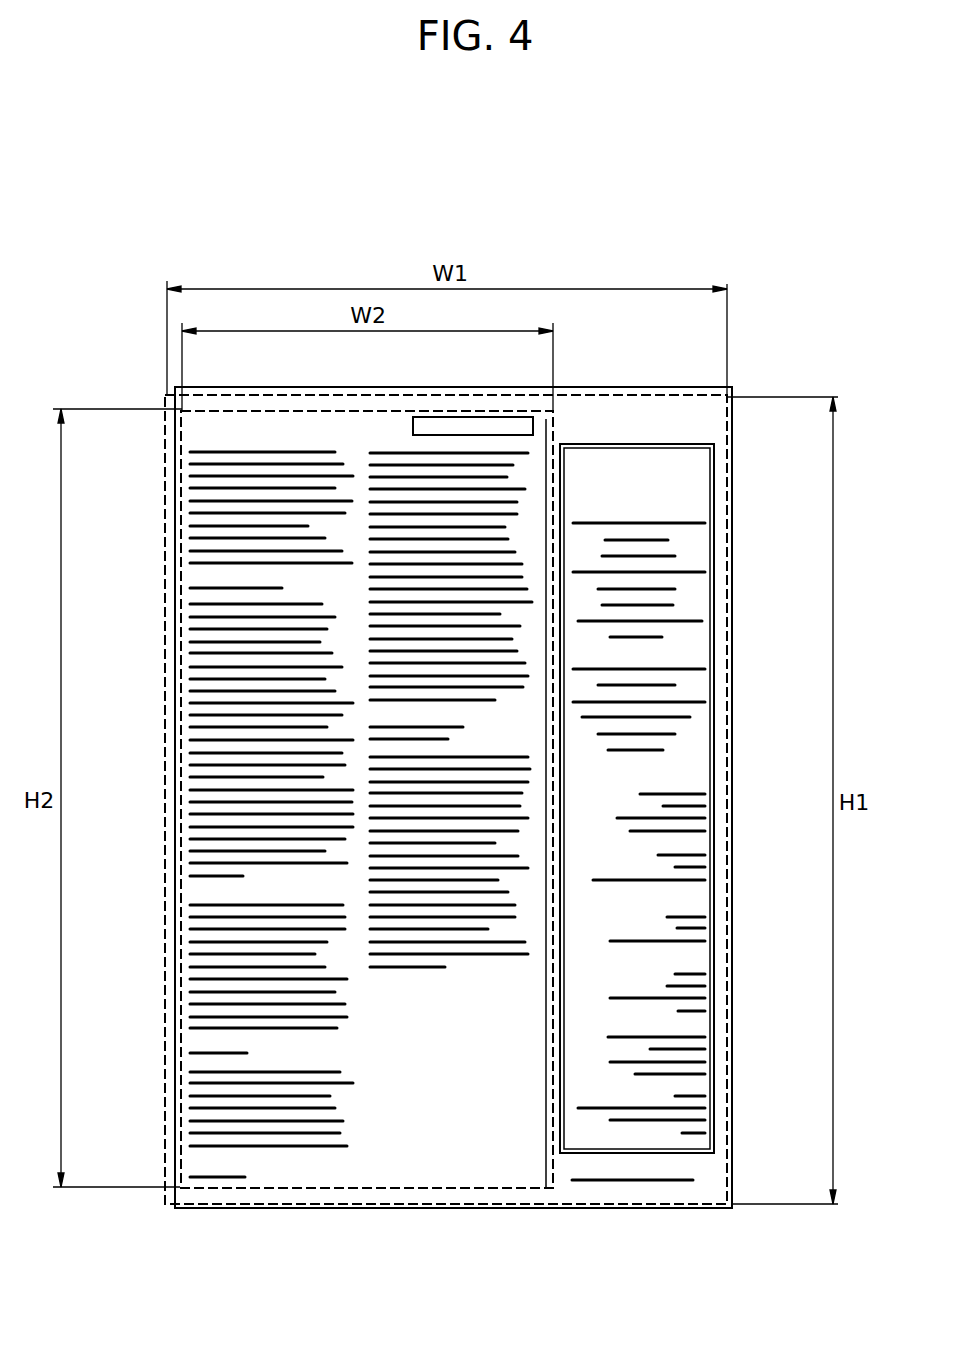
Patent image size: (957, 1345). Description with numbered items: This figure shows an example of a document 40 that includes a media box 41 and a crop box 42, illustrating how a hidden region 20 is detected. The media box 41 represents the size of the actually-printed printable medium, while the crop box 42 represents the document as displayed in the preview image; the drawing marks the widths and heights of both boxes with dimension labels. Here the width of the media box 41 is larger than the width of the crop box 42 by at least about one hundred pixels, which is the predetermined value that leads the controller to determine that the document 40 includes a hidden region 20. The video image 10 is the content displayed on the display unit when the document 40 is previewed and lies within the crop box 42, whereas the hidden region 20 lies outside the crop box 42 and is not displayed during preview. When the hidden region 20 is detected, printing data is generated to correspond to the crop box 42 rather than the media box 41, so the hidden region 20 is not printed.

The document 40 is at (795, 266).
The media box 41 is at (165, 580).
The crop box 42 is at (182, 646).
The video image 10 is at (200, 770).
The hidden region 20 is at (711, 581).